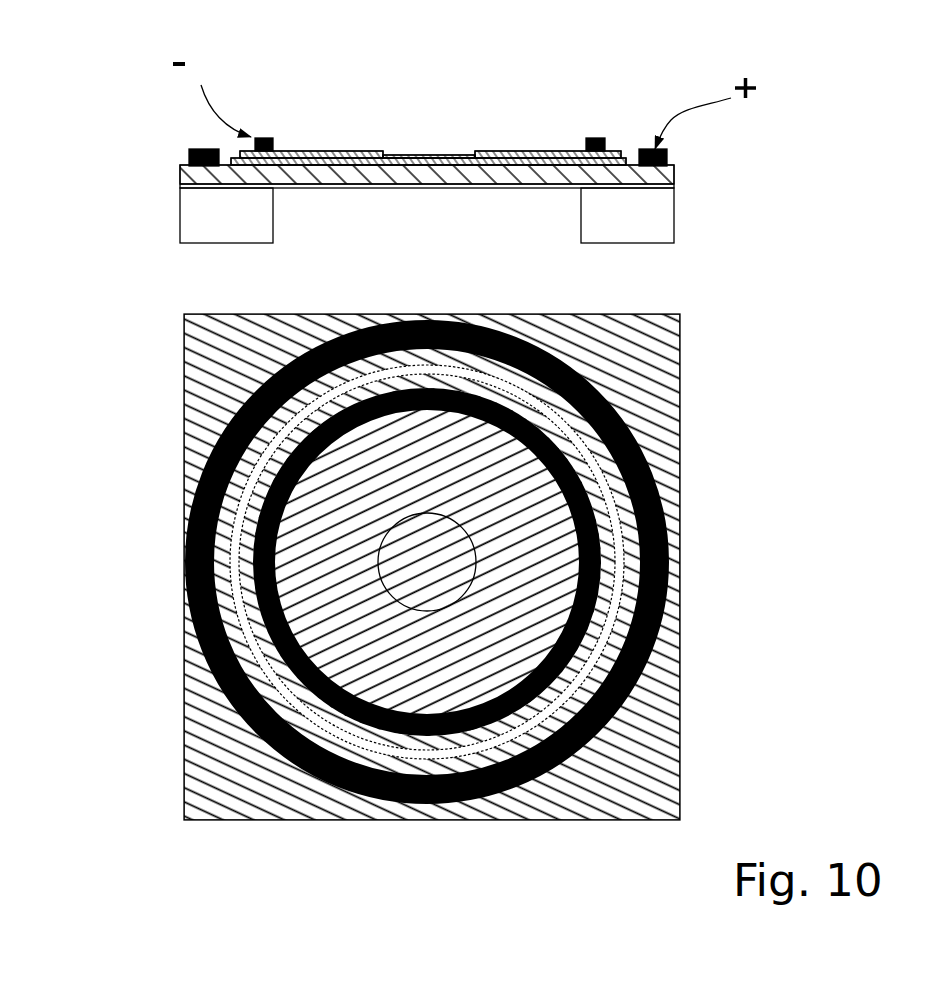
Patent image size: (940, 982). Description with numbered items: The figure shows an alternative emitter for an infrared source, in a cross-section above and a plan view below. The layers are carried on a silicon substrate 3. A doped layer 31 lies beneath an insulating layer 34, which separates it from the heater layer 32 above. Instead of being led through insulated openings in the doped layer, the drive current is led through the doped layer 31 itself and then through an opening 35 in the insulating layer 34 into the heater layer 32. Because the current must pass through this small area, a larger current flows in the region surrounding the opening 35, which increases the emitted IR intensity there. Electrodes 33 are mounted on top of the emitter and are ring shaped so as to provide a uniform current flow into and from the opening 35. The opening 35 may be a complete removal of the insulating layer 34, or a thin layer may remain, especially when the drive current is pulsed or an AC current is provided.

The silicon substrate 3 is at (592, 208).
The doped layer 31 is at (466, 170).
The heater layer 32 is at (332, 143).
The electrodes 33 is at (238, 129).
The insulating layer 34 is at (337, 158).
The opening 35 is at (418, 148).